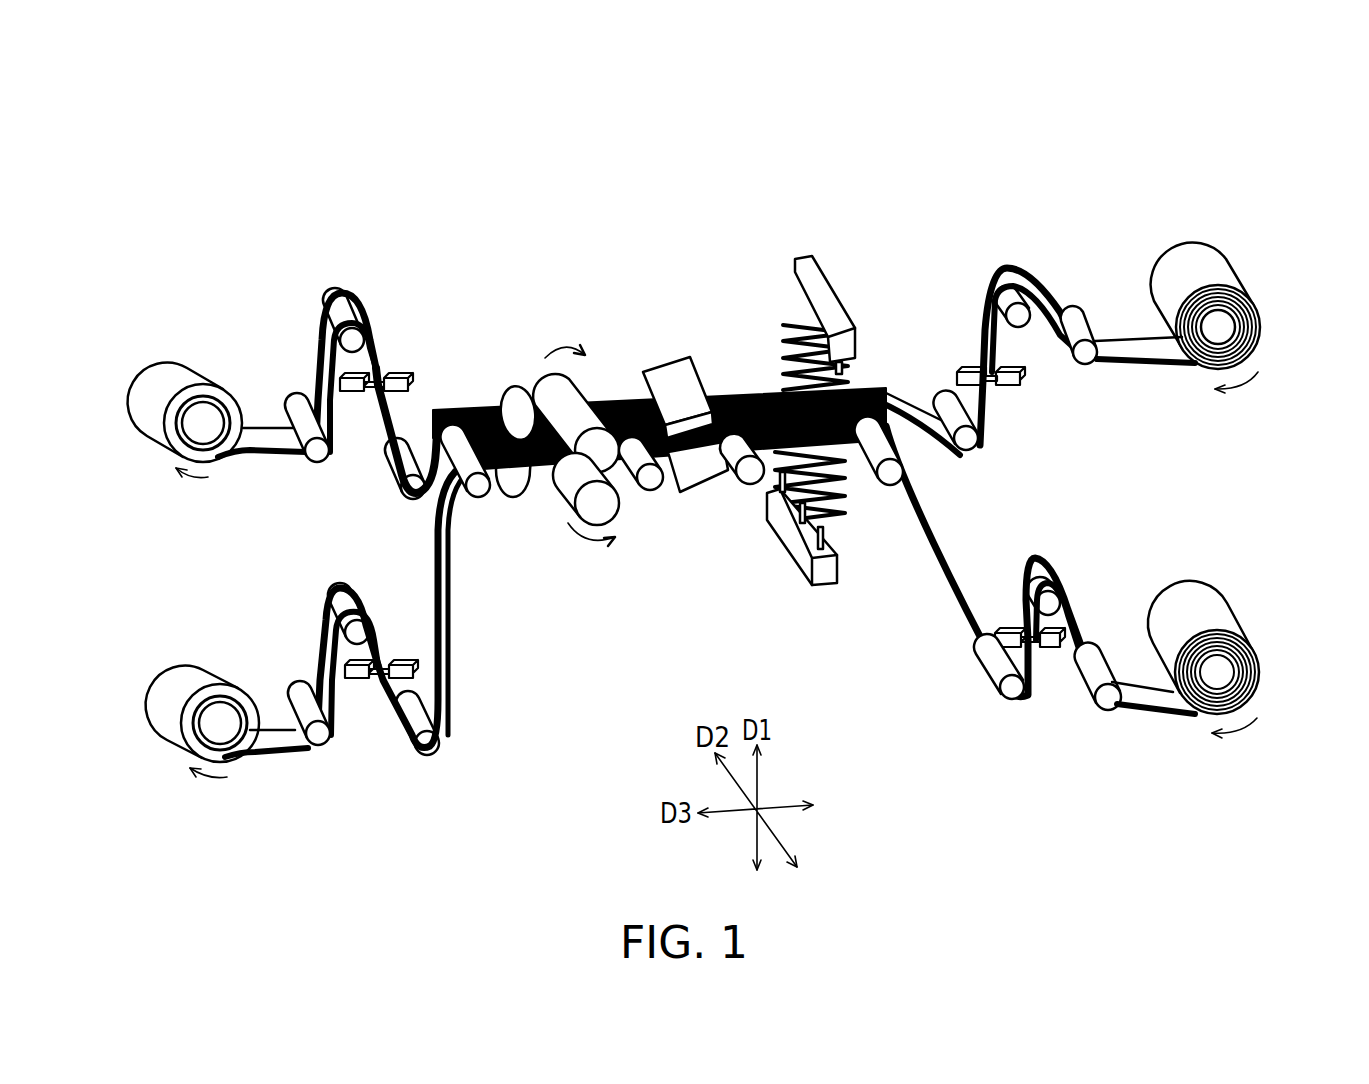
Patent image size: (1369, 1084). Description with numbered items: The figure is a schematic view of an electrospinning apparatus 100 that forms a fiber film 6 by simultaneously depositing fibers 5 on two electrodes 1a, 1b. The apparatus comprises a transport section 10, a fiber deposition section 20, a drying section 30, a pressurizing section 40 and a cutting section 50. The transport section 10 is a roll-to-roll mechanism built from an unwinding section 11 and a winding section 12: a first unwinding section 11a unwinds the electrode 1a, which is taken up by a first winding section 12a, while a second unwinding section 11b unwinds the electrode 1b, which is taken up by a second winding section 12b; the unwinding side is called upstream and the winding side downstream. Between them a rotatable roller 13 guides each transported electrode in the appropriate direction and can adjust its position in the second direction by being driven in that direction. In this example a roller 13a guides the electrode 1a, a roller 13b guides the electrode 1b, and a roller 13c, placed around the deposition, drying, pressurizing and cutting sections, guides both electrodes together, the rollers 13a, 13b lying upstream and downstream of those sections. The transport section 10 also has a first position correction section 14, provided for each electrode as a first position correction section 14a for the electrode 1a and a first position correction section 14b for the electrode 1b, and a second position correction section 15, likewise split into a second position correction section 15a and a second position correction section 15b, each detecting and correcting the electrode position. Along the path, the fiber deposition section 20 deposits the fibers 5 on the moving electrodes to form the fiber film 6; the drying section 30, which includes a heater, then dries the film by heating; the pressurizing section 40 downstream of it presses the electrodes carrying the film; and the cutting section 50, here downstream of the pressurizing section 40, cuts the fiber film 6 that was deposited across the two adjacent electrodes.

The electrospinning apparatus 100 is at (1186, 108).
The transport section 10 is at (978, 253).
The fiber deposition section 20 is at (862, 283).
The drying section 30 is at (672, 352).
The pressurizing section 40 is at (595, 373).
The cutting section 50 is at (503, 390).
The fibers 5 is at (790, 350).
The fiber film 6 is at (723, 405).
The electrode 1a is at (1125, 343).
The electrode 1b is at (1140, 690).
The unwinding section 11 is at (1257, 244).
The first unwinding section 11a is at (1218, 328).
The second unwinding section 11b is at (1218, 673).
The winding section 12 is at (157, 347).
The first winding section 12a is at (197, 418).
The second winding section 12b is at (217, 722).
The roller 13 is at (1117, 378).
The roller 13a is at (1088, 358).
The roller 13b is at (1108, 700).
The roller 13c is at (893, 480).
The first position correction section 14 is at (952, 352).
The first position correction section 14a is at (1013, 385).
The first position correction section 14b is at (1008, 630).
The second position correction section 15 is at (413, 350).
The second position correction section 15a is at (385, 377).
The second position correction section 15b is at (392, 665).